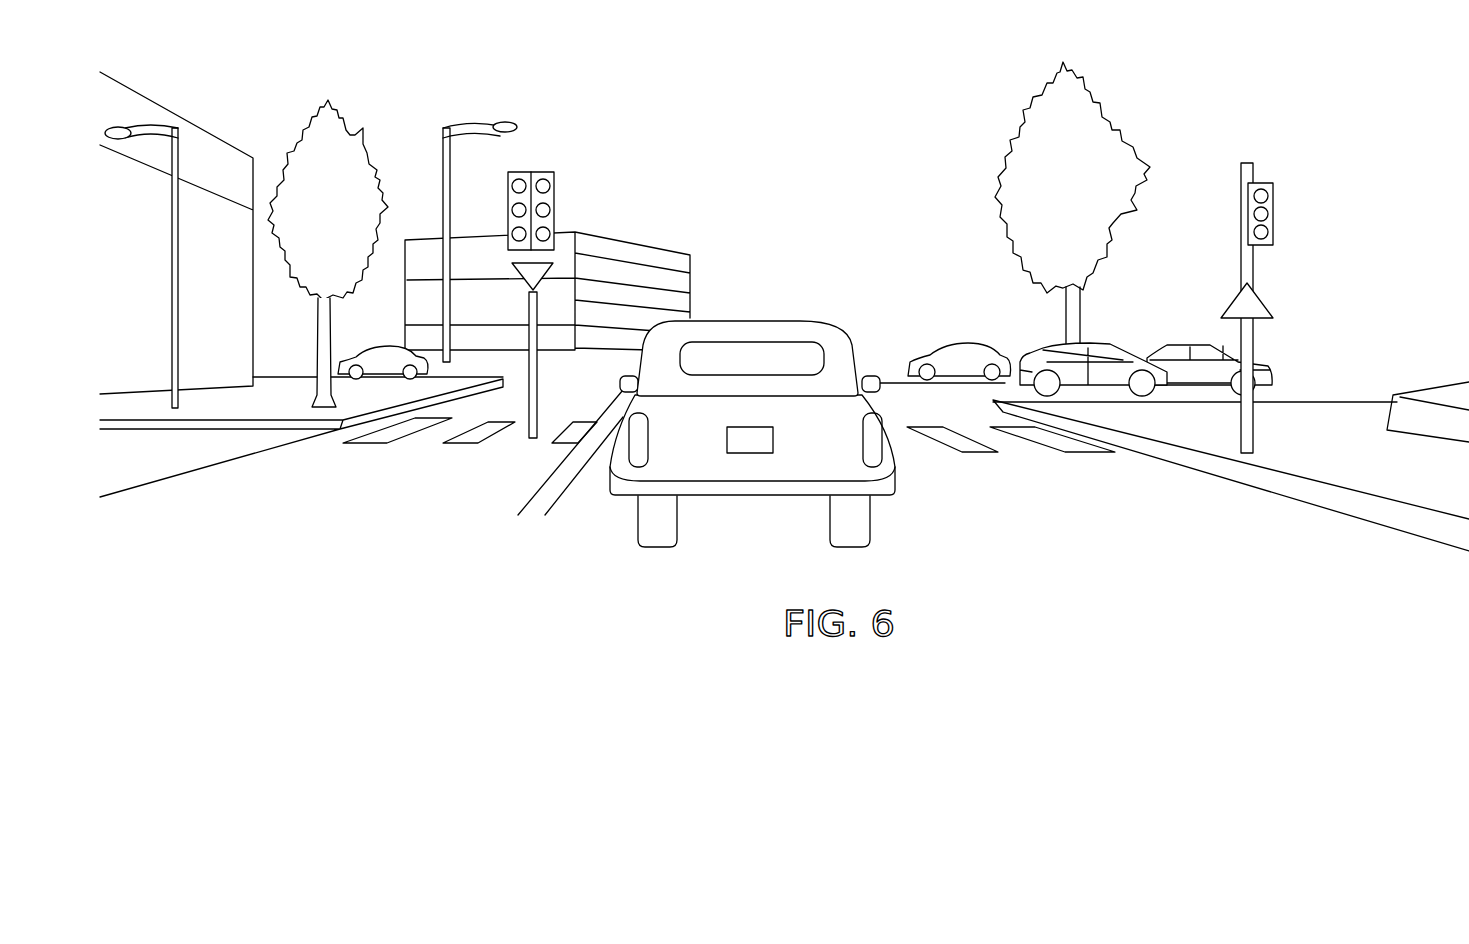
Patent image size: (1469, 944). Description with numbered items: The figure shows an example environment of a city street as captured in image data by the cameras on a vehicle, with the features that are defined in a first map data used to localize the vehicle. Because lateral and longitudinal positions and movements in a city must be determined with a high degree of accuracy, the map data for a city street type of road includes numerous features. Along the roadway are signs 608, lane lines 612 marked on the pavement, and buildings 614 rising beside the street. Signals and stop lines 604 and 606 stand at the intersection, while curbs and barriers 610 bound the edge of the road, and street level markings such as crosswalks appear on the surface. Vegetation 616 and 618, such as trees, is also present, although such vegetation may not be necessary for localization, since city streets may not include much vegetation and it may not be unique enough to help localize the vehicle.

The signals and stop lines 604 is at (557, 194).
The signals and stop lines 606 is at (1275, 212).
The signs 608 is at (1266, 308).
The curbs and barriers 610 is at (1265, 486).
The lane lines 612 is at (590, 450).
The buildings 614 is at (683, 248).
The vegetation 616 is at (362, 126).
The vegetation 618 is at (1120, 130).